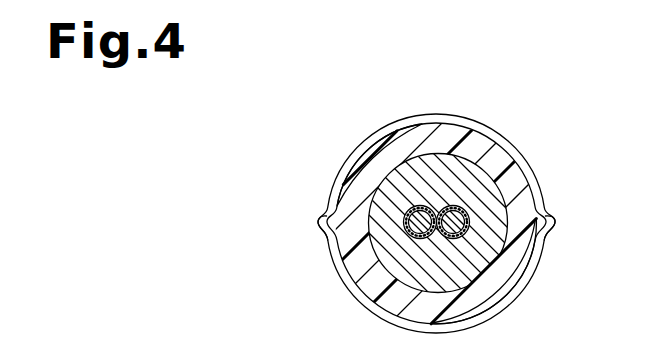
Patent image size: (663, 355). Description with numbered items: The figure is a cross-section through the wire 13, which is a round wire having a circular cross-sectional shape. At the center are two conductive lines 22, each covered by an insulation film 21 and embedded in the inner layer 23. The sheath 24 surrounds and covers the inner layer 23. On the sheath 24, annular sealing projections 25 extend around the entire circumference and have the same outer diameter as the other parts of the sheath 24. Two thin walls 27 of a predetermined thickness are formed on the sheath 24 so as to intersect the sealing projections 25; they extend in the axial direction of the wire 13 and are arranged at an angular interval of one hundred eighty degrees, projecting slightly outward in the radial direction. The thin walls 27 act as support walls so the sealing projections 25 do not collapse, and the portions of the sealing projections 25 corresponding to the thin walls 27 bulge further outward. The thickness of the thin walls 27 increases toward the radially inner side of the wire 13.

The wire 13 is at (468, 115).
The insulation film 21 is at (460, 209).
The conductive lines 22 is at (437, 240).
The inner layer 23 is at (367, 297).
The sheath 24 is at (507, 285).
The sealing projections 25 is at (410, 121).
The thin walls 27 is at (556, 221).